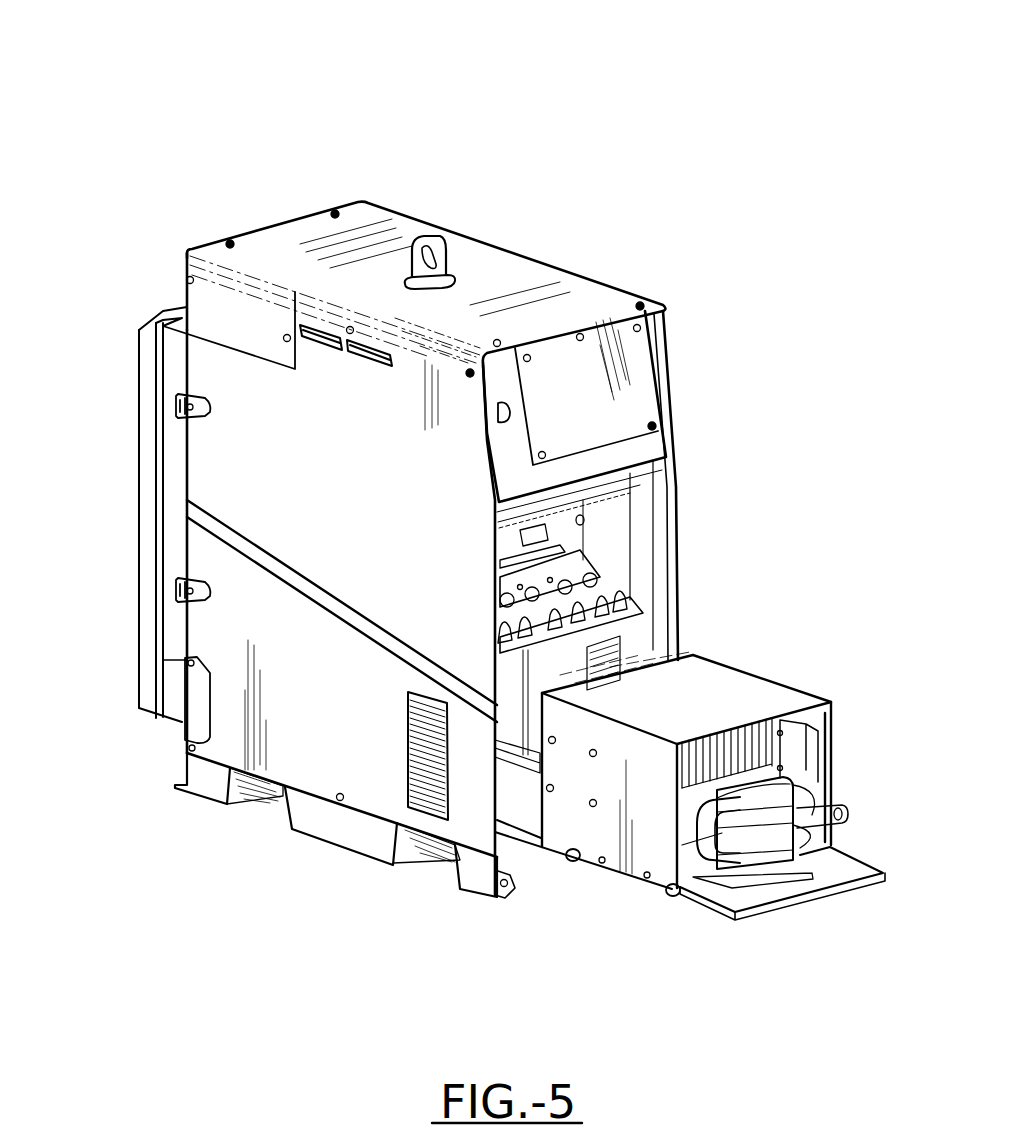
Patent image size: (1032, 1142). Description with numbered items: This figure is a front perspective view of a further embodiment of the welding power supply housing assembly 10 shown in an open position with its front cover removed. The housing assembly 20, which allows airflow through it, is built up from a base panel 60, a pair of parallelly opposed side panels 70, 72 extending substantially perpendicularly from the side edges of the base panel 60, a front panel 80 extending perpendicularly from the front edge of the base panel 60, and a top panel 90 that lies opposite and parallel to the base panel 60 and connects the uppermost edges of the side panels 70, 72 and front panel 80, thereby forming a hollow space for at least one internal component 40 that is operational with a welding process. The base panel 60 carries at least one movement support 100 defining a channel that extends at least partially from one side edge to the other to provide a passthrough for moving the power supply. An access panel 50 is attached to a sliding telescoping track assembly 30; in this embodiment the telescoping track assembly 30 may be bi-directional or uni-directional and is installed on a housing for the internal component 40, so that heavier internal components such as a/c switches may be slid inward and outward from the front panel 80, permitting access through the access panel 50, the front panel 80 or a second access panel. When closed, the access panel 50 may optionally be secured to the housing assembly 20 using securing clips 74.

The welding power supply housing assembly 10 is at (736, 118).
The housing assembly 20 is at (178, 226).
The telescoping track assembly 30 is at (688, 910).
The internal component 40 is at (745, 752).
The access panel 50 is at (125, 372).
The base panel 60 is at (308, 852).
The side panel 70 is at (306, 487).
The side panel 72 is at (567, 250).
The securing clips 74 is at (210, 408).
The front panel 80 is at (705, 527).
The top panel 90 is at (372, 272).
The movement support 100 is at (258, 814).